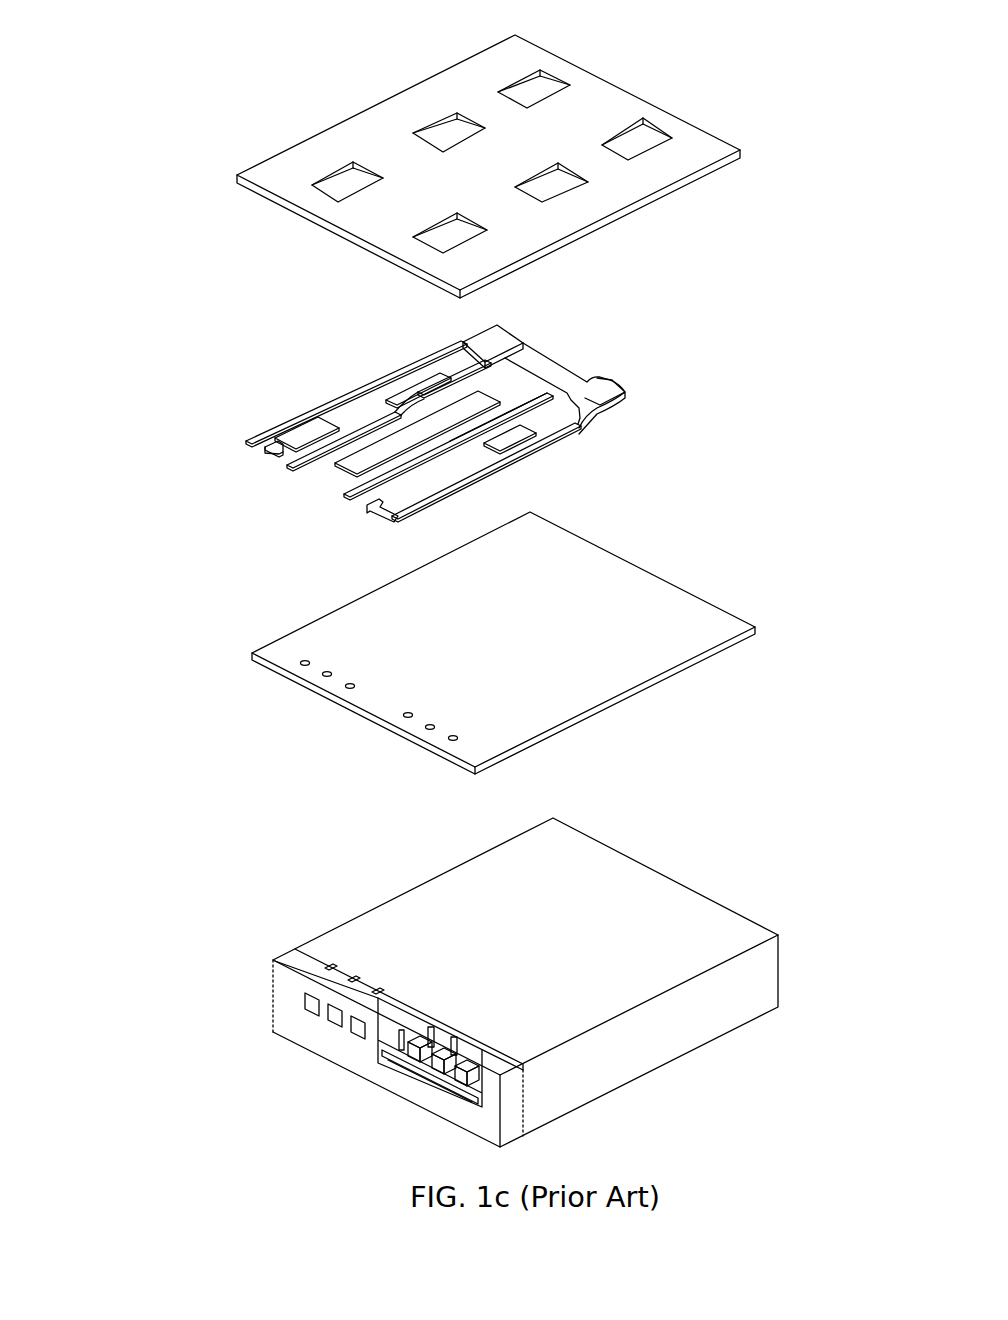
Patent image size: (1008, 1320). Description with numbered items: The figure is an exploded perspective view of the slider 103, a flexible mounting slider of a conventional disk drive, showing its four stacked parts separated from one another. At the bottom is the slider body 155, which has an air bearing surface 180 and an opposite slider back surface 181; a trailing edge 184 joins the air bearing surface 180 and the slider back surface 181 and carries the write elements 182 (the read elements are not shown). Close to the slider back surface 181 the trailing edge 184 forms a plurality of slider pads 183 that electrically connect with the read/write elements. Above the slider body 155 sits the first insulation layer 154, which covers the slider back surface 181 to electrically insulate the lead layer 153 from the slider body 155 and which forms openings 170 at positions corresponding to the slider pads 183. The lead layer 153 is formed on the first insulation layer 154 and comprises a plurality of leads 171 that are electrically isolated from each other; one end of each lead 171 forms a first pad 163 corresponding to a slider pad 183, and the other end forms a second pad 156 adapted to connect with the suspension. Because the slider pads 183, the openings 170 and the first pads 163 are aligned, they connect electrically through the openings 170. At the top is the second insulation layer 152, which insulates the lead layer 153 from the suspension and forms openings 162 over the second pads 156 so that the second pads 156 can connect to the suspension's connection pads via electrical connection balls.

The slider 103 is at (180, 130).
The second insulation layer 152 is at (554, 166).
The openings 162 is at (645, 137).
The lead layer 153 is at (505, 448).
The second pad 156 is at (598, 381).
The leads 171 is at (553, 450).
The first pads 163 is at (395, 519).
The first insulation layer 154 is at (578, 670).
The openings 170 is at (453, 742).
The slider body 155 is at (542, 986).
The slider back surface 181 is at (447, 908).
The air bearing surface 180 is at (672, 1058).
The write elements 182 is at (398, 1075).
The slider pads 183 is at (477, 1052).
The trailing edge 184 is at (308, 1032).